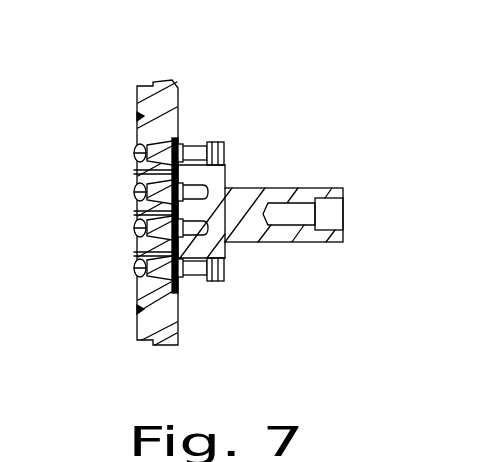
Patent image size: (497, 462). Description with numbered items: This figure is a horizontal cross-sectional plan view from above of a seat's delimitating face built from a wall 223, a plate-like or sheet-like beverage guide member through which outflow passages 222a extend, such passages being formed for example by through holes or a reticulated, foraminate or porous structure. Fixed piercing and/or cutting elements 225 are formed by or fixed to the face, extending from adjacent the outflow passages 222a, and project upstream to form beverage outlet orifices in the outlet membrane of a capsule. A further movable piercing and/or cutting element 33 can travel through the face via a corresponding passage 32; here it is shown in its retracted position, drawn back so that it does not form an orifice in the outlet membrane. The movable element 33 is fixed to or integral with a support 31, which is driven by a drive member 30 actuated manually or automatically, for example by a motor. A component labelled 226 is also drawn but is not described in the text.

The wall 223 is at (174, 74).
The piercing and/or cutting element 225 is at (137, 162).
The movable piercing and/or cutting element 33 is at (137, 271).
The passage 32 is at (137, 300).
The outflow passage 222a is at (183, 160).
The sleeve band 226 is at (181, 252).
The support 31 is at (218, 252).
The drive member 30 is at (330, 187).